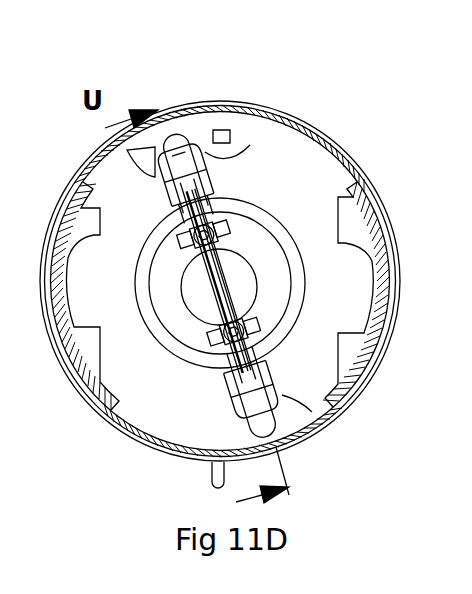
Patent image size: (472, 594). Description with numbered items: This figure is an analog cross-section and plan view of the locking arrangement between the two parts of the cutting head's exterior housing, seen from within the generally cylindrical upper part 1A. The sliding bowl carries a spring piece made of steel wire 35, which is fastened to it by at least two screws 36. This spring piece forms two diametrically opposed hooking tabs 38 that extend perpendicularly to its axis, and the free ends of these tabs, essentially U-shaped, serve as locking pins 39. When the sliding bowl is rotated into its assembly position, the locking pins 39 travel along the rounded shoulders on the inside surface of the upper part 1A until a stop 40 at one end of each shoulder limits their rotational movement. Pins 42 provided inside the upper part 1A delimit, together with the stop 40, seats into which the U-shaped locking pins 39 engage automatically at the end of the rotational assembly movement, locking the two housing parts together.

The upper part 1A is at (331, 163).
The spring piece made of steel wire 35 is at (222, 322).
The screws 36 is at (193, 236).
The hooking tabs 38 is at (210, 173).
The locking pins 39 is at (167, 140).
The stop 40 is at (170, 138).
The pins 42 is at (193, 127).